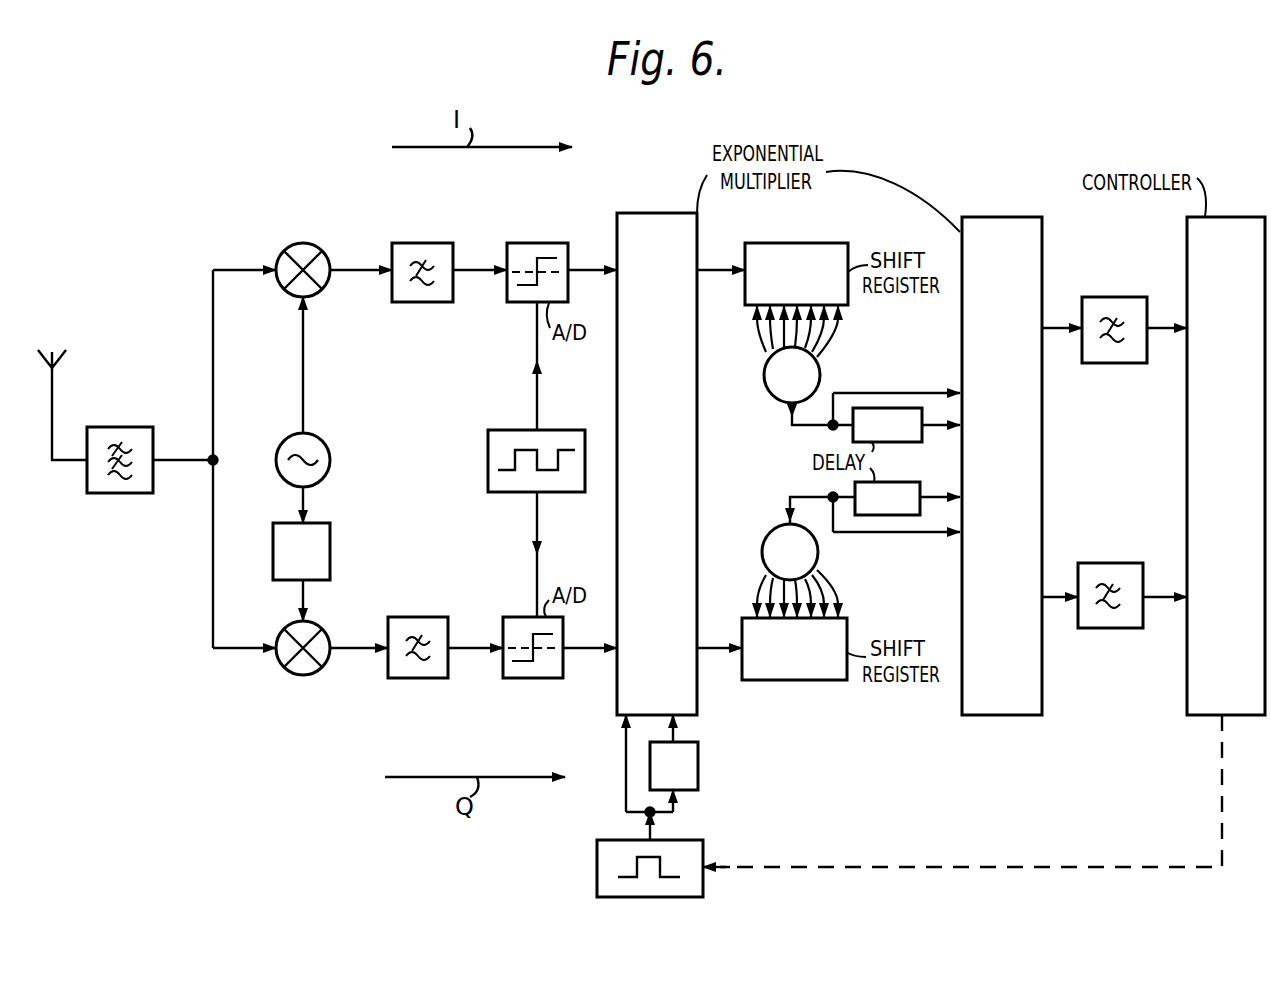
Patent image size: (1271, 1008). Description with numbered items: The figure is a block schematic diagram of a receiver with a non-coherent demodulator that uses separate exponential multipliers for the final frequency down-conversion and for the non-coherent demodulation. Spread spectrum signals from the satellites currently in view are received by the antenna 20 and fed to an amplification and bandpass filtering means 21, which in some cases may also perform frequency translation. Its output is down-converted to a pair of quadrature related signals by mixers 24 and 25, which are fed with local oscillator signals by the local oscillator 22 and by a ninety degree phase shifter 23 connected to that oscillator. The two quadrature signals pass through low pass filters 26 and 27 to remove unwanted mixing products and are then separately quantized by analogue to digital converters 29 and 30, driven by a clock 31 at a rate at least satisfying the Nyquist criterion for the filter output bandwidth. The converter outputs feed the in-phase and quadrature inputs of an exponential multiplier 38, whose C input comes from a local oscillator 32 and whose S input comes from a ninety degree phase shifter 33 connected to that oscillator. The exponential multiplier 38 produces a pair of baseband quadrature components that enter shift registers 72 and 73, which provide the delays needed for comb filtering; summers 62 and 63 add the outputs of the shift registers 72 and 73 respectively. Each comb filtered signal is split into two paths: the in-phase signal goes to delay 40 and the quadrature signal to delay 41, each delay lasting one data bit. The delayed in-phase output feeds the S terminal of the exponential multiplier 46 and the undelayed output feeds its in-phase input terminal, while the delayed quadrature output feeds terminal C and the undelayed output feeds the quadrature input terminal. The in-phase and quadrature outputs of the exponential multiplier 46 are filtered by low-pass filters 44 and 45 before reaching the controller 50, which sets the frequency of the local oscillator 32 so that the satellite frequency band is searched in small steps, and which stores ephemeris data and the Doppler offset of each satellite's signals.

The antenna 20 is at (58, 342).
The amplification and bandpass filtering means 21 is at (134, 427).
The local oscillator 22 is at (322, 437).
The 90° phase shifter 23 is at (330, 545).
The mixer 24 is at (312, 245).
The mixer 25 is at (305, 675).
The low pass filter 26 is at (432, 243).
The low pass filter 27 is at (425, 678).
The analogue to digital (A/D) converter 29 is at (544, 243).
The analogue to digital (A/D) converter 30 is at (533, 678).
The clock 31 is at (567, 430).
The local oscillator 32 is at (597, 867).
The 90° phase shifter 33 is at (698, 768).
The exponential multiplier 38 is at (654, 213).
The delay 40 is at (905, 408).
The delay 41 is at (903, 515).
The low-pass filter 44 is at (1120, 297).
The low-pass filter 45 is at (1117, 563).
The exponential multiplier 46 is at (1000, 217).
The controller 50 is at (1231, 217).
The summer 62 is at (765, 385).
The summer 63 is at (768, 530).
The shift register 72 is at (803, 243).
The shift register 73 is at (813, 680).